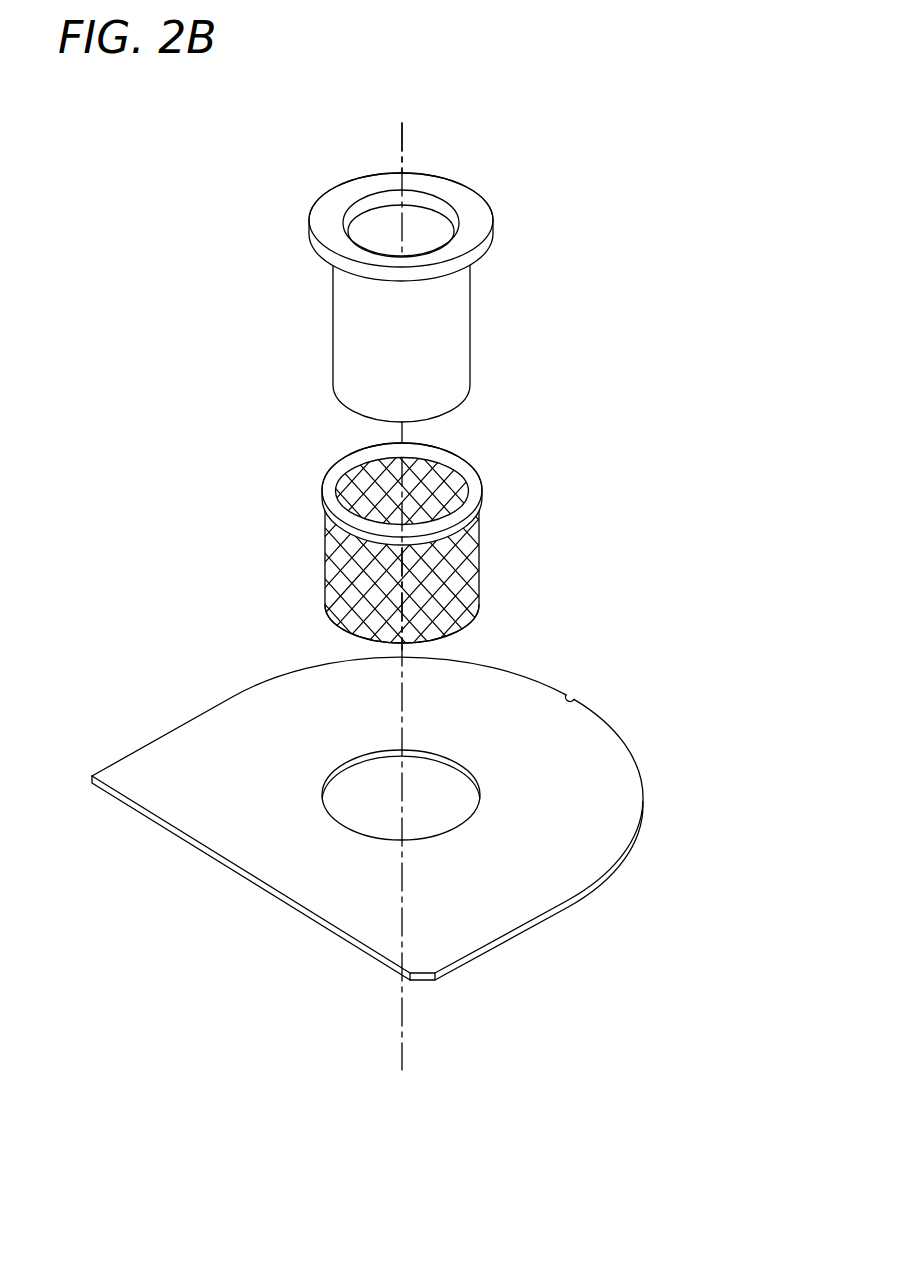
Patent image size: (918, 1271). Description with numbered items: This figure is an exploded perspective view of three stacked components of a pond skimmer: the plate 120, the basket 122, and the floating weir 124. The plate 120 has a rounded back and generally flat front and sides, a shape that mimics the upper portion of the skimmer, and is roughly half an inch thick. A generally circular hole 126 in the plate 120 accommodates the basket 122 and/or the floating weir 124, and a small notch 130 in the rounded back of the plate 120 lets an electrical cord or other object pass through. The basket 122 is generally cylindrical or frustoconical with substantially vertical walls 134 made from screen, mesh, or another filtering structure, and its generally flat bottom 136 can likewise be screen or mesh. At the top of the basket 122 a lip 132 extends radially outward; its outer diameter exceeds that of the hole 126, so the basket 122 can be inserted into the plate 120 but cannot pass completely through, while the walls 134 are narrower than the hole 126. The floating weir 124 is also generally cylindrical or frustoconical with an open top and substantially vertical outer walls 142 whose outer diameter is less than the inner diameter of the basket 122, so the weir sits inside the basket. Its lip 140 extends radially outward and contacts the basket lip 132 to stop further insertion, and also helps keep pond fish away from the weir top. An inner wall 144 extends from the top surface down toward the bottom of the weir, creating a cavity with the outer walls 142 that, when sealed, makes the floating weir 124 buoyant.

The plate 120 is at (417, 861).
The basket 122 is at (434, 548).
The floating weir 124 is at (487, 272).
The hole 126 is at (428, 798).
The notch 130 is at (576, 695).
The lip 132 is at (330, 480).
The walls 134 is at (353, 572).
The bottom 136 is at (458, 633).
The lip 140 is at (348, 193).
The outer walls 142 is at (358, 339).
The inner wall 144 is at (430, 205).